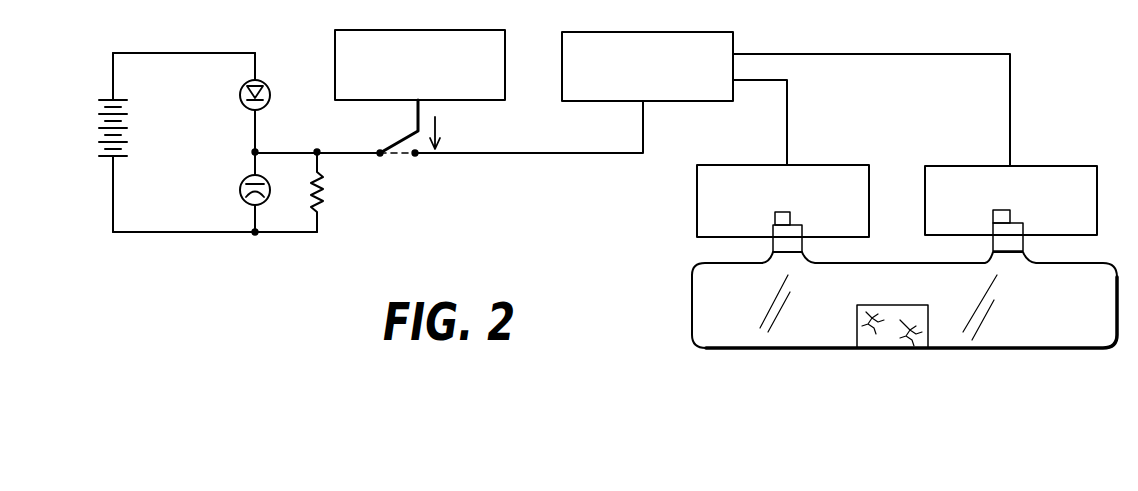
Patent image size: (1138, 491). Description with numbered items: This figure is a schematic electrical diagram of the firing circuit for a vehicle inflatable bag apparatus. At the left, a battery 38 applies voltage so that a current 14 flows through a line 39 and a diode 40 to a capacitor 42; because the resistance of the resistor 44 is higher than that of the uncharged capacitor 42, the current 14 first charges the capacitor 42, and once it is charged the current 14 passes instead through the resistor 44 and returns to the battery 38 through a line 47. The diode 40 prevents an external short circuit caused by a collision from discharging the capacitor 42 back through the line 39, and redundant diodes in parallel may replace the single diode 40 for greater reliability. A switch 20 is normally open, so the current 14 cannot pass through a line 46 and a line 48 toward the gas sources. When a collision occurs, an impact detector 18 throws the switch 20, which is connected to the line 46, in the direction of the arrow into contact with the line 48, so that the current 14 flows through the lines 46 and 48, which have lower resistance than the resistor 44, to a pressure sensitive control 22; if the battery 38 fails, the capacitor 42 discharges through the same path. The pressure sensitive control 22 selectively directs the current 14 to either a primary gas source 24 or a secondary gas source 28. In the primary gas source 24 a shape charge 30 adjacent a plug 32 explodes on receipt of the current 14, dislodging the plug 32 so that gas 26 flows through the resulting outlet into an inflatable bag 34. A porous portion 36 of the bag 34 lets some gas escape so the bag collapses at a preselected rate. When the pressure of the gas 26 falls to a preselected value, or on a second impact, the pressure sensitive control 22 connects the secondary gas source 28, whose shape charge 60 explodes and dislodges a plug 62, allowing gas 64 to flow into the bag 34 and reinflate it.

The current 14 is at (112, 64).
The impact detector 18 is at (350, 101).
The switch 20 is at (397, 139).
The pressure sensitive control 22 is at (570, 102).
The primary gas source 24 is at (942, 166).
The gas 26 is at (1066, 178).
The secondary gas source 28 is at (821, 166).
The shape charge 30 is at (1011, 218).
The plug 32 is at (1015, 243).
The inflatable bag 34 is at (692, 293).
The porous portion 36 is at (884, 340).
The battery 38 is at (97, 134).
The line 39 is at (205, 52).
The diode 40 is at (240, 91).
The capacitor 42 is at (240, 186).
The resistor 44 is at (322, 200).
The line 46 is at (355, 157).
The line 47 is at (176, 234).
The line 48 is at (505, 157).
The shape charge 60 is at (775, 219).
The plug 62 is at (786, 244).
The gas 64 is at (850, 178).